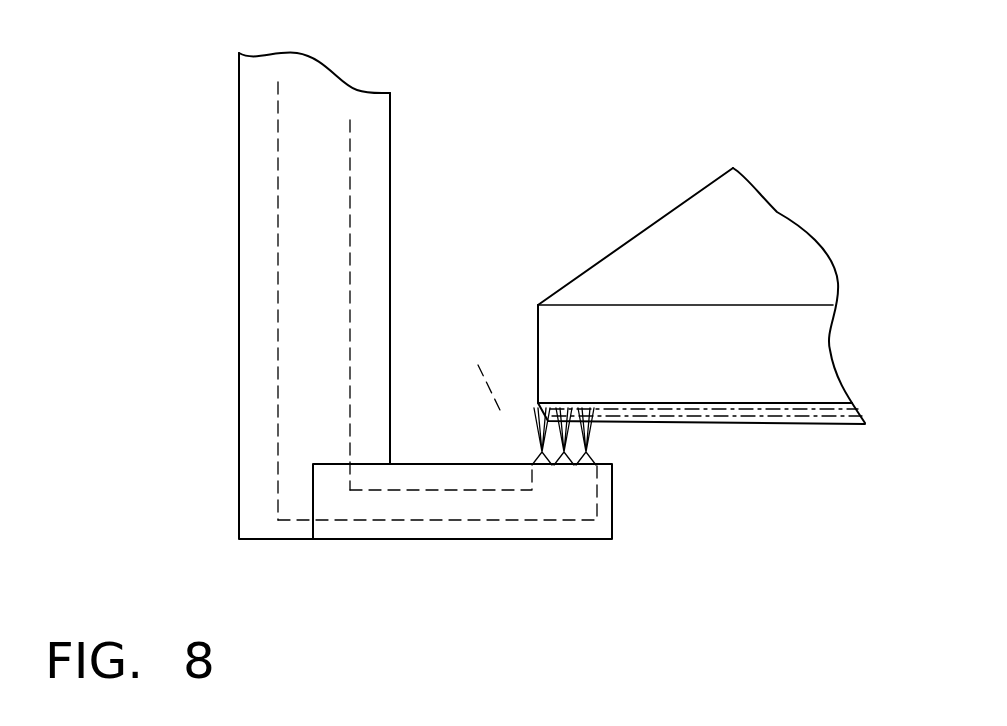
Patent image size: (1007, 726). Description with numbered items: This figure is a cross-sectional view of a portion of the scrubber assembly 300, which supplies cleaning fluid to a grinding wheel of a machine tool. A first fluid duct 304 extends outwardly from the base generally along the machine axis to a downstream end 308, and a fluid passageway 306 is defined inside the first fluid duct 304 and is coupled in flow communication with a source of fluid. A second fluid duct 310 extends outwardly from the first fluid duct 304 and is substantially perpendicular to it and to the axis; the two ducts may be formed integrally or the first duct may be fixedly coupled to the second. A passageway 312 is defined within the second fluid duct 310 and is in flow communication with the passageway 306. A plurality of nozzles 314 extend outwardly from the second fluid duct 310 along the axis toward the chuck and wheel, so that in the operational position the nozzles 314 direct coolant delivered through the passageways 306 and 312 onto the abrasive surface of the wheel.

The scrubber assembly 300 is at (673, 160).
The first fluid duct 304 is at (390, 279).
The fluid passageway 306 is at (303, 190).
The downstream end 308 is at (238, 212).
The second fluid duct 310 is at (443, 545).
The passageway 312 is at (510, 510).
The nozzles 314 is at (597, 440).